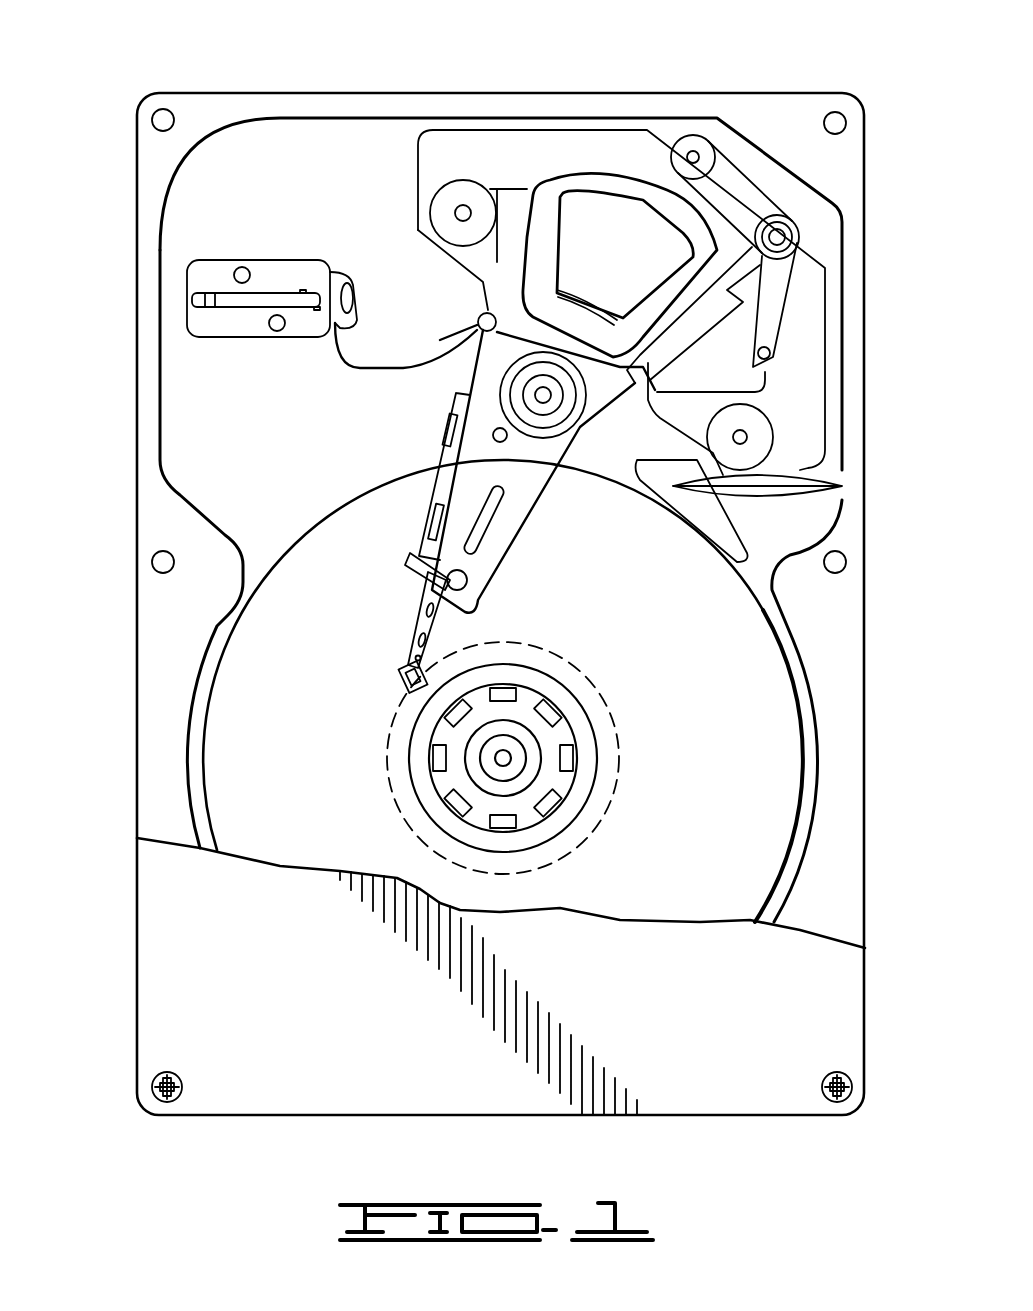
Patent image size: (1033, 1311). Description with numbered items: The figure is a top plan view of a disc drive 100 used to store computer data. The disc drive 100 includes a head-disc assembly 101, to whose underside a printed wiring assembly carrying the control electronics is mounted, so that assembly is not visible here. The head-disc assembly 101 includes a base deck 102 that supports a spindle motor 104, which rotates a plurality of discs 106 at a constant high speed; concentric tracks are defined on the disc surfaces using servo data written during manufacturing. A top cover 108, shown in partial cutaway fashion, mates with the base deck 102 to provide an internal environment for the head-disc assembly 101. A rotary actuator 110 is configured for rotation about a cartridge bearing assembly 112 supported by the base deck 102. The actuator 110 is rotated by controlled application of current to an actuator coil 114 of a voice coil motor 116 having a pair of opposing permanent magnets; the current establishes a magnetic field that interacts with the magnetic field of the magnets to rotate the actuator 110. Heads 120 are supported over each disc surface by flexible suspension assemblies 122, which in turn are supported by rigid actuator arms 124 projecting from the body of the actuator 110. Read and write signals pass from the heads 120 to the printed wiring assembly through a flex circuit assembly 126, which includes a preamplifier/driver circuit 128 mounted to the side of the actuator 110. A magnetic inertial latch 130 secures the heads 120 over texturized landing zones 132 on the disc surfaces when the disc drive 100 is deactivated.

The disc drive 100 is at (235, 46).
The head-disc assembly 101 is at (170, 160).
The base deck 102 is at (192, 415).
The spindle motor 104 is at (560, 734).
The discs 106 is at (778, 772).
The top cover 108 is at (190, 915).
The rotary actuator 110 is at (512, 478).
The cartridge bearing assembly 112 is at (545, 398).
The actuator coil 114 is at (573, 173).
The voice coil motor 116 is at (632, 140).
The heads 120 is at (400, 670).
The flexible suspension assemblies 122 is at (430, 630).
The actuator arms 124 is at (470, 568).
The flex circuit assembly 126 is at (381, 358).
The preamplifier/driver circuit 128 is at (450, 390).
The magnetic inertial latch 130 is at (777, 290).
The texturized landing zones 132 is at (590, 665).